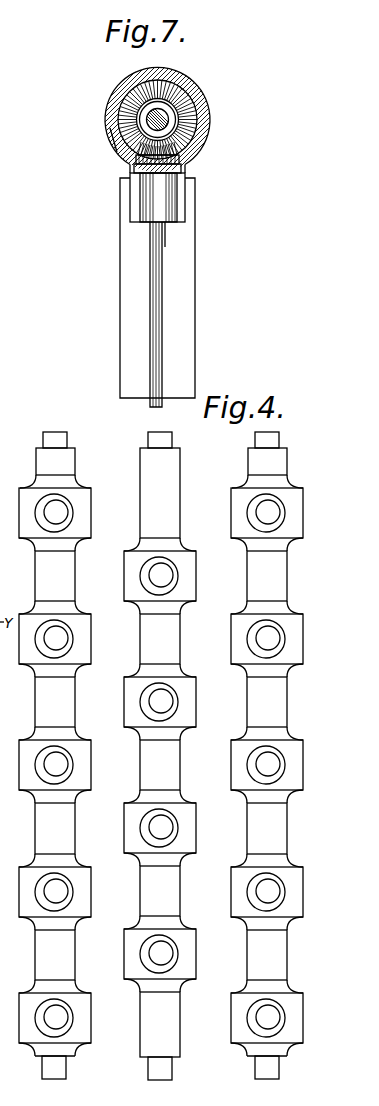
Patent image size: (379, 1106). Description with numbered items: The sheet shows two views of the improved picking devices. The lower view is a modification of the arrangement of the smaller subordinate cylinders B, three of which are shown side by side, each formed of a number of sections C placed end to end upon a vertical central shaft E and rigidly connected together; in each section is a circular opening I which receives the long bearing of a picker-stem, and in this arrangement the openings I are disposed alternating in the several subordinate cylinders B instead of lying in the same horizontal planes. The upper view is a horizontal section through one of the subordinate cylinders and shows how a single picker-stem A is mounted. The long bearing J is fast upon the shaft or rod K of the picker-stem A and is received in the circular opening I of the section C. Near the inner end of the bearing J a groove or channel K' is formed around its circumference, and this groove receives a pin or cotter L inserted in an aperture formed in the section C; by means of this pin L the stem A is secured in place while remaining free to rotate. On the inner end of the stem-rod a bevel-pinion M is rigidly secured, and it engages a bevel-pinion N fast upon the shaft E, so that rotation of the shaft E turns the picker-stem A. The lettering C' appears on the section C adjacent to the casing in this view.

In FIG. 7, the vertical central shaft E is at (163, 112).
In FIG. 7, the section C is at (157, 120).
In FIG. 7, the bevel-pinion M is at (200, 151).
In FIG. 7, the pin L is at (186, 170).
In FIG. 7, the casing extension C' is at (104, 147).
In FIG. 7, the bevel-pinion N is at (118, 160).
In FIG. 7, the groove K' is at (139, 197).
In FIG. 7, the bearing J is at (158, 210).
In FIG. 7, the picker-stem A is at (147, 288).
In FIG. 7, the shaft or rod K is at (166, 314).
In FIG. 4, the subordinate cylinder B is at (97, 516).
In FIG. 4, the circular opening I is at (160, 765).